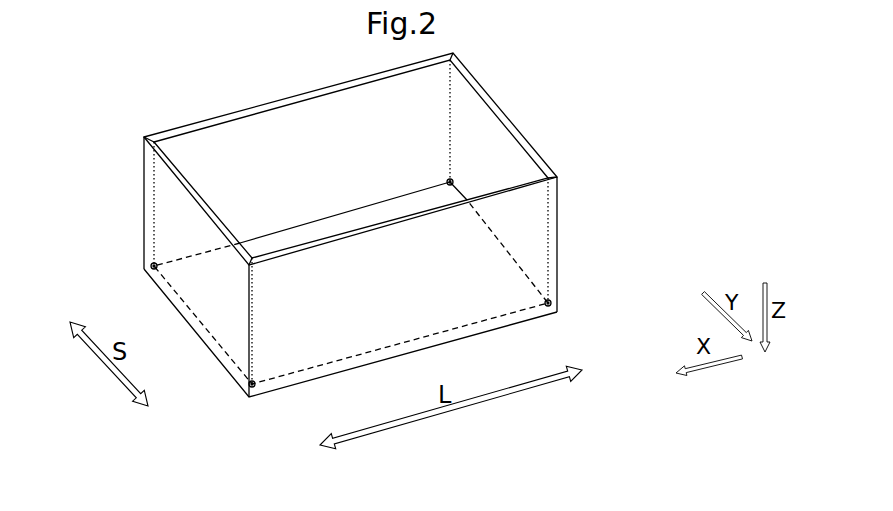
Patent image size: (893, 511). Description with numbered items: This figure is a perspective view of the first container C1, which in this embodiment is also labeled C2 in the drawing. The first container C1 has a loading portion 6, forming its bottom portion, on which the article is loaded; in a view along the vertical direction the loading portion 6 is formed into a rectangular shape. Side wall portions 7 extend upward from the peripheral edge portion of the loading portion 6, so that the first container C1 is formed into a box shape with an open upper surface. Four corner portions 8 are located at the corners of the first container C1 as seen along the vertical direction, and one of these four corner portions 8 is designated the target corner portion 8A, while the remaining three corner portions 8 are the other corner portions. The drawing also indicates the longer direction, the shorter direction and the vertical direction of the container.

The side wall portions 7 is at (250, 143).
The corner portions 8 is at (448, 180).
The target corner portion 8A is at (151, 265).
The loading portion 6 is at (342, 228).
The first container C1 is at (366, 242).
The container C2 is at (331, 242).